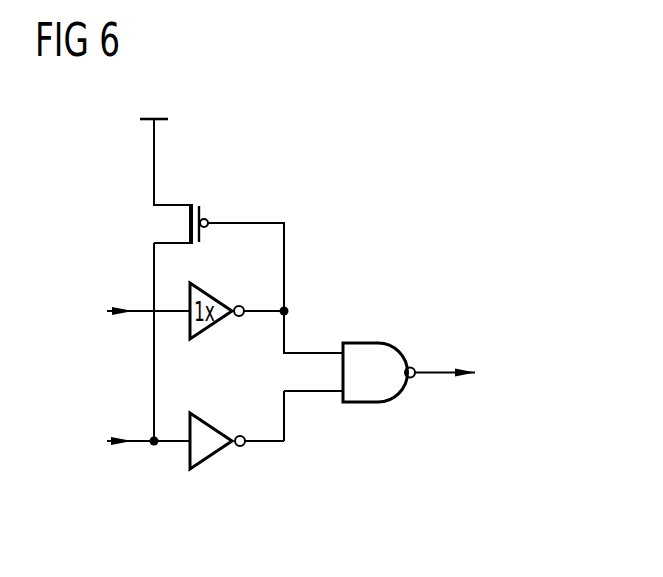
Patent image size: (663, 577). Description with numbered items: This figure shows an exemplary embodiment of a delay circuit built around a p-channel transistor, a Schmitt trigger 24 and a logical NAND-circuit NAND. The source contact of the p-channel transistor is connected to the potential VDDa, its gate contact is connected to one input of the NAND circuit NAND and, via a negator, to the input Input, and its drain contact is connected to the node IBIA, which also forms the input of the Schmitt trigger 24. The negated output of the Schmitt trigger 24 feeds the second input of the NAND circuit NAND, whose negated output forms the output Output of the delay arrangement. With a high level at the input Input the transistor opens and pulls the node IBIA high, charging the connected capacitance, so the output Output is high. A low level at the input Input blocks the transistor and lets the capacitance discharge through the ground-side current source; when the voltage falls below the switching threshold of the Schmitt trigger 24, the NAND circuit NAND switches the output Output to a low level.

The Schmitt trigger 24 is at (214, 456).
The potential VDDa is at (158, 142).
The input Input is at (117, 307).
The input IBIA is at (122, 441).
The logical NAND-circuit NAND is at (376, 354).
The output Output is at (482, 371).